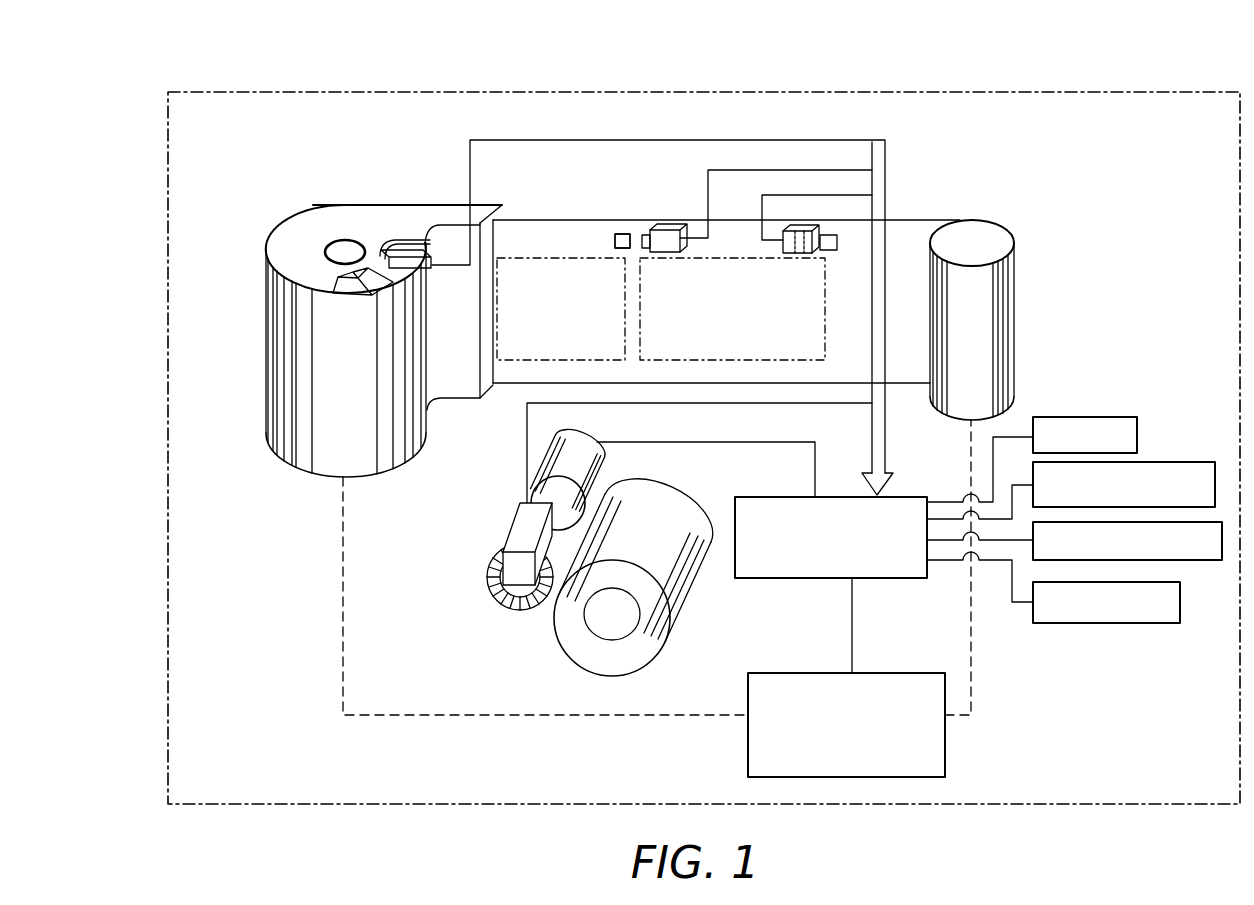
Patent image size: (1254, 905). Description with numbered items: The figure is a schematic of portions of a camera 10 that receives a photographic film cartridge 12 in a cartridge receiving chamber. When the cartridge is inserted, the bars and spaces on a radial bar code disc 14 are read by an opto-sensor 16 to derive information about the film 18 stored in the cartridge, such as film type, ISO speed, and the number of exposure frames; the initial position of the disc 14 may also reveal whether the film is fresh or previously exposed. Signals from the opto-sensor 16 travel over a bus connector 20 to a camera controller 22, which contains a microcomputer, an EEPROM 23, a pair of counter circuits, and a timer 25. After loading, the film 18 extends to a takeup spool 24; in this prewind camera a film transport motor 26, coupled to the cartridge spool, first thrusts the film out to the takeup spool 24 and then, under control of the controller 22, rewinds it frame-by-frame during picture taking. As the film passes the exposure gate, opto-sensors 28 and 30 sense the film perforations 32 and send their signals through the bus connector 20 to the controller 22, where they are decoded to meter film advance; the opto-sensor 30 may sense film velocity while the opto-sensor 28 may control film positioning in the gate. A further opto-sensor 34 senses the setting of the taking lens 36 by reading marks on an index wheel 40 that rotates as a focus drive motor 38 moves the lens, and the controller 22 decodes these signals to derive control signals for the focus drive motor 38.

The camera 10 is at (642, 92).
The film cartridge 12 is at (310, 207).
The radial bar code disc 14 is at (347, 288).
The opto-sensor 16 is at (407, 258).
The film 18 is at (565, 220).
The bus connector 20 is at (885, 192).
The camera controller 22 is at (897, 497).
The EEPROM 23 is at (1095, 625).
The takeup spool 24 is at (1013, 292).
The timer 25 is at (1137, 440).
The film transport motor 26 is at (863, 673).
The opto-sensor 28 is at (667, 227).
The opto-sensor 30 is at (783, 243).
The film perforations 32 is at (614, 241).
The opto-sensor 34 is at (503, 556).
The taking lens 36 is at (558, 640).
The focus drive motor 38 is at (550, 447).
The index wheel 40 is at (490, 592).